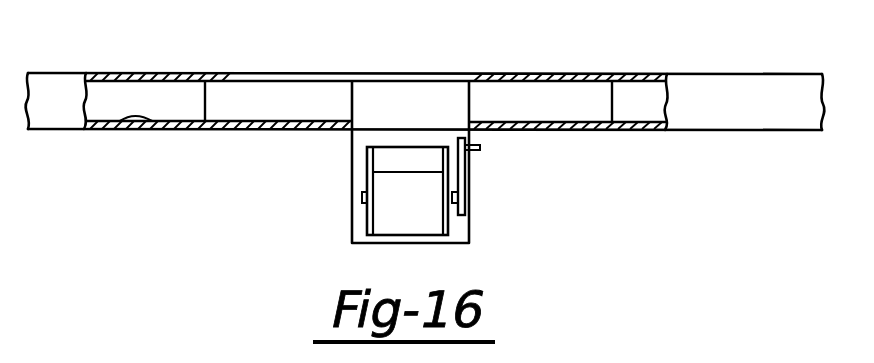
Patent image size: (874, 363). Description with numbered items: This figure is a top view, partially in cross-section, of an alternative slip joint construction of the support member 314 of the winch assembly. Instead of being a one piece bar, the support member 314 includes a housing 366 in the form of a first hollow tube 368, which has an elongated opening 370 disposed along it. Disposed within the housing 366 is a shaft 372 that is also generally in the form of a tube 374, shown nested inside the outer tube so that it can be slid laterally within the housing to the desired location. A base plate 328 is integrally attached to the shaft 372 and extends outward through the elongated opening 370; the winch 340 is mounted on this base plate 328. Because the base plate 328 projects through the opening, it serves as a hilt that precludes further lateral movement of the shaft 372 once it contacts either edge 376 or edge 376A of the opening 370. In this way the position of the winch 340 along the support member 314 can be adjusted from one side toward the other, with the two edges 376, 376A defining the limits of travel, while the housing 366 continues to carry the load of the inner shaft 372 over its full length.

The support member 314 is at (762, 103).
The base plate 328 is at (453, 231).
The winch 340 is at (385, 212).
The housing 366 is at (697, 75).
The first hollow tube 368 is at (157, 128).
The elongated opening 370 is at (258, 76).
The shaft 372 is at (327, 90).
The tube 374 is at (305, 103).
The edge 376 is at (250, 130).
The edge 376A is at (462, 76).